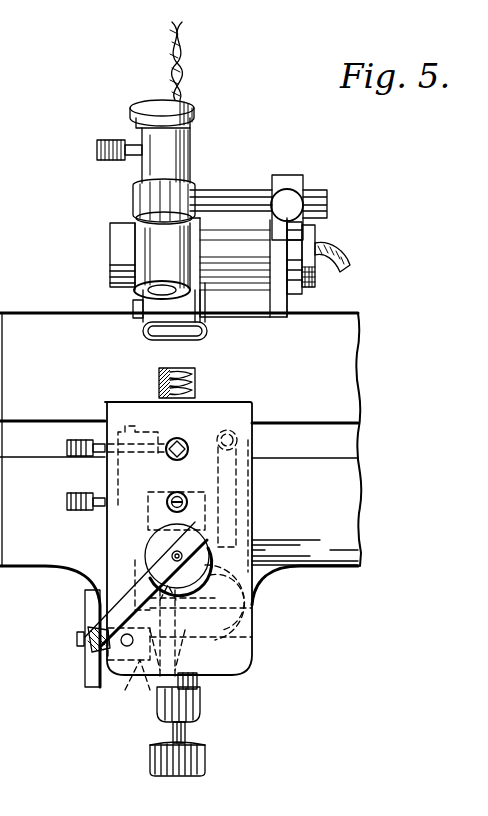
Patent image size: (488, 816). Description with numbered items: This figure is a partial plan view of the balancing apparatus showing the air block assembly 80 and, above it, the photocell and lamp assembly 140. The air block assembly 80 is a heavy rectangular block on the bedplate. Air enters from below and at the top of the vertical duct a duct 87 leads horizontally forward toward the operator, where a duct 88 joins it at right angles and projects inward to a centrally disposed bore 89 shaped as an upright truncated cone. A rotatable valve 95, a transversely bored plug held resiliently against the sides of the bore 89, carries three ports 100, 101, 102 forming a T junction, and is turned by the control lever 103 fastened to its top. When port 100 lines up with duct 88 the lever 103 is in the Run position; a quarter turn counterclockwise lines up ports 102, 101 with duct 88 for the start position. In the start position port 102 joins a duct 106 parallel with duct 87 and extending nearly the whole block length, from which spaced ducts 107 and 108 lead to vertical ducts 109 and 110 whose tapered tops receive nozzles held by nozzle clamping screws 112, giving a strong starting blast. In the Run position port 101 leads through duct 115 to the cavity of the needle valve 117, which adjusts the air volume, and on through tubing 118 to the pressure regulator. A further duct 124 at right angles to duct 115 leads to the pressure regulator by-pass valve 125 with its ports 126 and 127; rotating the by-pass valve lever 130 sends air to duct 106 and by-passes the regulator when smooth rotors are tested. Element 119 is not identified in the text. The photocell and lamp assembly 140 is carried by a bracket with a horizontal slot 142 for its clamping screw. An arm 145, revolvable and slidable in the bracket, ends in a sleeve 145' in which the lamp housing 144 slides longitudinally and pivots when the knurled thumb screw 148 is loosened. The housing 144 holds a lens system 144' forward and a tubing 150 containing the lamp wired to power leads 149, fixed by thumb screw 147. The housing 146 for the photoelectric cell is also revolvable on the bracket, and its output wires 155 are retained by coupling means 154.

The air block assembly 80 is at (252, 533).
The duct 87 is at (236, 503).
The duct 88 is at (217, 575).
The bore 89 is at (180, 536).
The rotatable valve 95 is at (155, 539).
The port 100 is at (350, 553).
The port 101 is at (148, 572).
The port 102 is at (150, 545).
The control lever 103 is at (100, 645).
The duct 106 is at (118, 538).
The duct 107 is at (148, 432).
The duct 108 is at (163, 494).
The vertical duct 109 is at (187, 502).
The vertical duct 110 is at (180, 440).
The nozzle clamping screws 112 is at (78, 493).
The duct 115 is at (252, 608).
The needle valve 117 is at (245, 716).
The tubing 118 is at (252, 637).
The knob 119 is at (206, 760).
The duct 124 is at (160, 688).
The pressure regulator by-pass valve 125 is at (88, 680).
The port 126 is at (150, 665).
The port 127 is at (136, 678).
The by-pass valve lever 130 is at (85, 614).
The photocell and lamp assembly 140 is at (243, 165).
The horizontal slot 142 is at (222, 308).
The lamp housing 144 is at (190, 149).
The lens system 144' is at (125, 294).
The arm 145 is at (210, 184).
The sleeve 145' is at (104, 185).
The housing 146 is at (125, 253).
The thumb screw 147 is at (97, 146).
The knurled thumb screw 148 is at (302, 195).
The power leads 149 is at (172, 52).
The tubing 150 is at (136, 122).
The coupling means 154 is at (297, 290).
The wires 155 is at (345, 262).